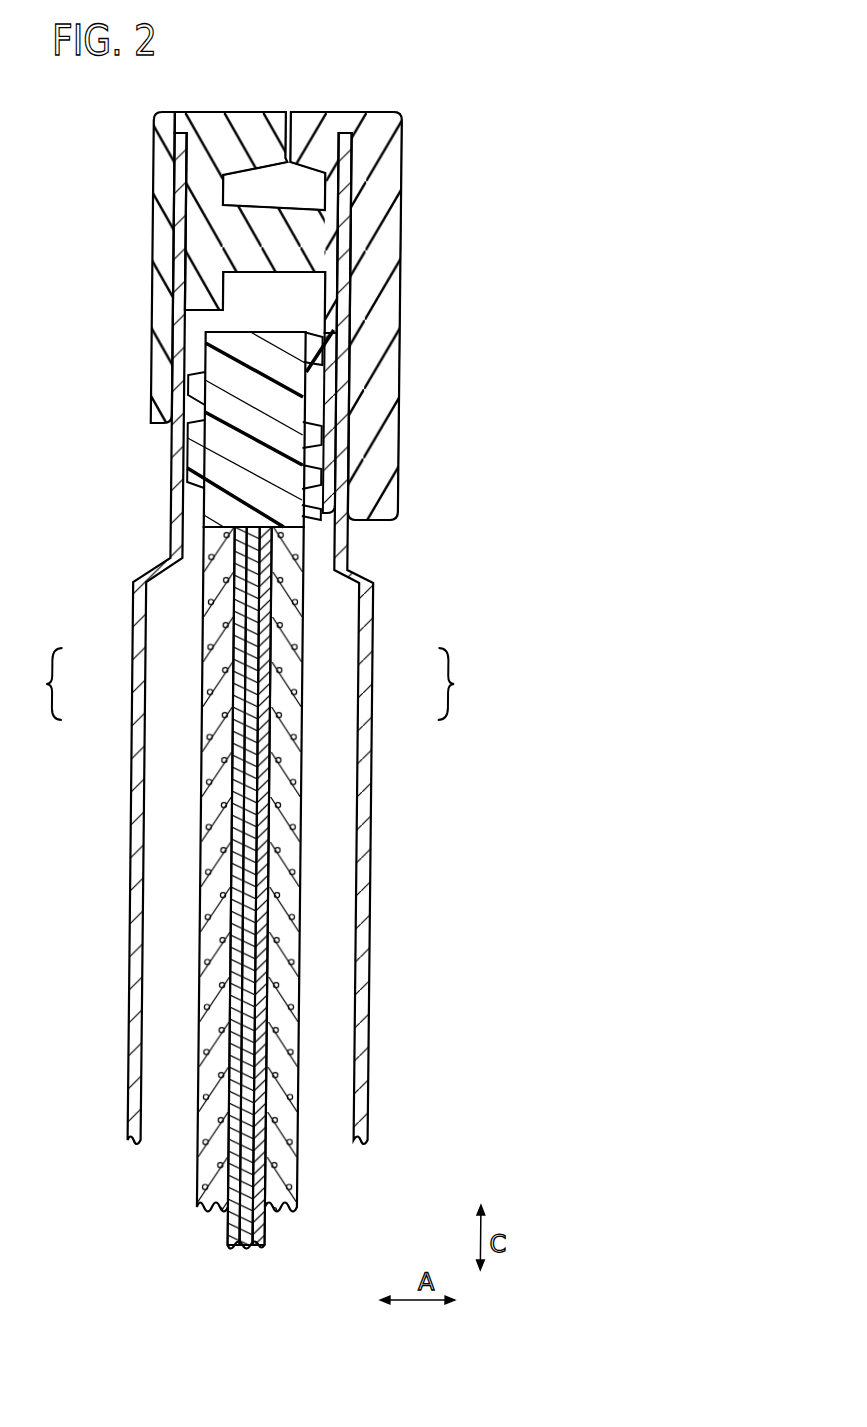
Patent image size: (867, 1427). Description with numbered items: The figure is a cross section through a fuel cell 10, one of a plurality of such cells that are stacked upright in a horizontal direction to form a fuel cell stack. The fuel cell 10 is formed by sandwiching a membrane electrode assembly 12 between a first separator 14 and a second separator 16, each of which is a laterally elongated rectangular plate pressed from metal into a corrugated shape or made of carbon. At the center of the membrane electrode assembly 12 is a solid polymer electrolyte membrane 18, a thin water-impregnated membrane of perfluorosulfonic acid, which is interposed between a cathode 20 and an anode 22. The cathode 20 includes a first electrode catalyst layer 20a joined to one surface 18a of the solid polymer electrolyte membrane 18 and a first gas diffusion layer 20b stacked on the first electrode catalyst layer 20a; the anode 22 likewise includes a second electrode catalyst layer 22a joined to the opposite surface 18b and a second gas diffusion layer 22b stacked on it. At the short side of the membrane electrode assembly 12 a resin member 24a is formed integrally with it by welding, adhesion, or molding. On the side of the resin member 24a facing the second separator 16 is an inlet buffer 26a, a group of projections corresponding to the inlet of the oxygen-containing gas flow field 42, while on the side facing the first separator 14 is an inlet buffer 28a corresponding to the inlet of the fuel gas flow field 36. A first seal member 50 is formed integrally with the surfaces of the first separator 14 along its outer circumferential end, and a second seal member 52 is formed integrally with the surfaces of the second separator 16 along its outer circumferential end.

The fuel cell 10 is at (212, 95).
The membrane electrode assembly 12 is at (252, 916).
The first separator 14 is at (374, 857).
The second separator 16 is at (131, 857).
The solid polymer electrolyte membrane 18 is at (249, 916).
The one surface of the solid polymer electrolyte membrane 18a is at (238, 1180).
The surface of the solid polymer electrolyte membrane 18b is at (267, 1172).
The cathode 20 is at (130, 886).
The first electrode catalyst layer 20a is at (238, 703).
The first gas diffusion layer 20b is at (212, 662).
The anode 22 is at (369, 886).
The second electrode catalyst layer 22a is at (263, 705).
The second gas diffusion layer 22b is at (292, 665).
The resin member 24a is at (289, 478).
The inlet buffer 26a is at (193, 430).
The inlet buffer 28a is at (308, 452).
The fuel gas flow field 36 is at (341, 797).
The oxygen-containing gas flow field 42 is at (161, 797).
The first seal member 50 is at (398, 137).
The second seal member 52 is at (146, 146).